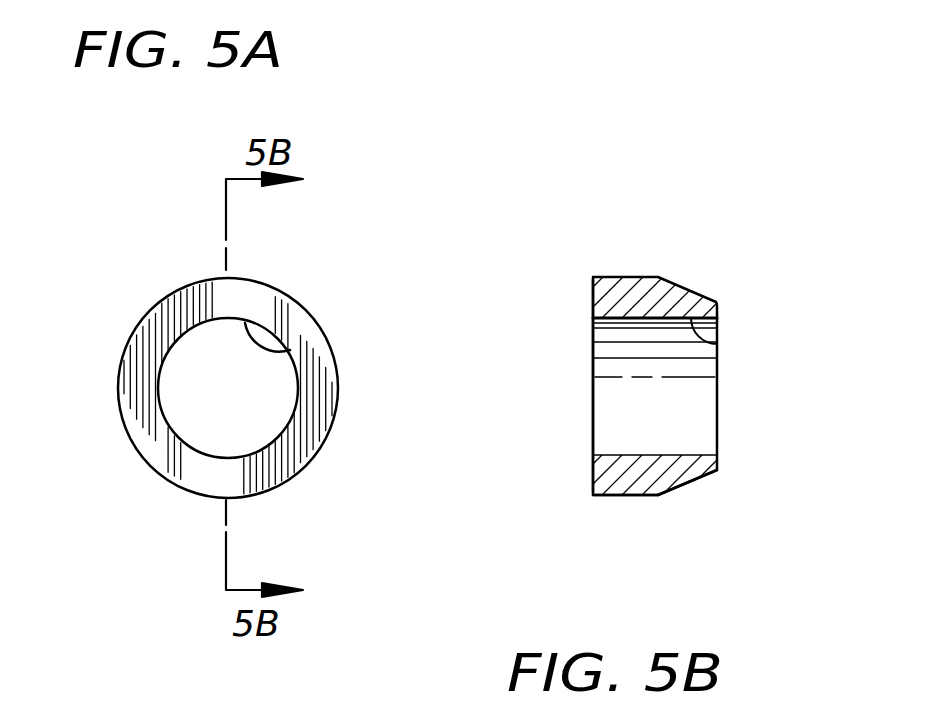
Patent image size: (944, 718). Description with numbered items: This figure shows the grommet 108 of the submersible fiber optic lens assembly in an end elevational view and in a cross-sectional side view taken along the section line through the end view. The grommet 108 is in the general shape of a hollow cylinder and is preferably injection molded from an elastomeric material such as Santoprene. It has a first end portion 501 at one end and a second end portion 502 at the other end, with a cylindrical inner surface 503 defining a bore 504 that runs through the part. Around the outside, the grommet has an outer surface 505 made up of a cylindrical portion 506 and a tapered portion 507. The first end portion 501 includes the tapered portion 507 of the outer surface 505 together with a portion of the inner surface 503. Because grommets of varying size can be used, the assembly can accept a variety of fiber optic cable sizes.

In FIG. 5A, the grommet 108 is at (158, 242).
In FIG. 5B, the grommet 108 is at (742, 254).
In FIG. 5B, the first end portion 501 is at (698, 420).
In FIG. 5B, the second end portion 502 is at (593, 422).
In FIG. 5A, the cylindrical inner surface 503 is at (291, 349).
In FIG. 5B, the cylindrical inner surface 503 is at (718, 340).
In FIG. 5B, the bore 504 is at (700, 370).
In FIG. 5A, the outer surface 505 is at (283, 290).
In FIG. 5B, the outer surface 505 is at (636, 277).
In FIG. 5B, the cylindrical portion 506 is at (630, 495).
In FIG. 5B, the tapered portion 507 is at (693, 480).